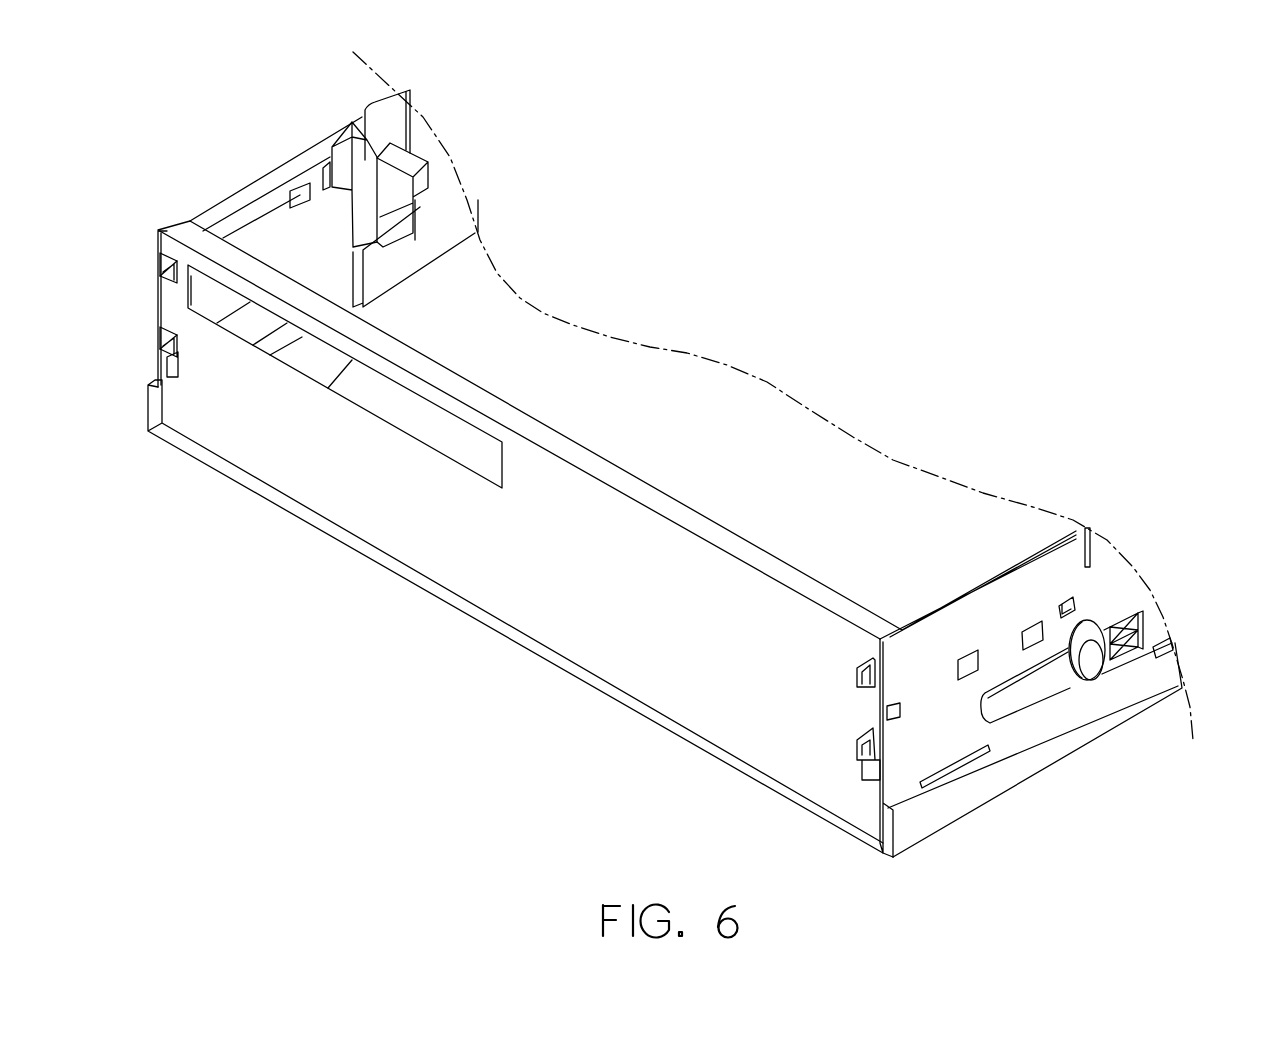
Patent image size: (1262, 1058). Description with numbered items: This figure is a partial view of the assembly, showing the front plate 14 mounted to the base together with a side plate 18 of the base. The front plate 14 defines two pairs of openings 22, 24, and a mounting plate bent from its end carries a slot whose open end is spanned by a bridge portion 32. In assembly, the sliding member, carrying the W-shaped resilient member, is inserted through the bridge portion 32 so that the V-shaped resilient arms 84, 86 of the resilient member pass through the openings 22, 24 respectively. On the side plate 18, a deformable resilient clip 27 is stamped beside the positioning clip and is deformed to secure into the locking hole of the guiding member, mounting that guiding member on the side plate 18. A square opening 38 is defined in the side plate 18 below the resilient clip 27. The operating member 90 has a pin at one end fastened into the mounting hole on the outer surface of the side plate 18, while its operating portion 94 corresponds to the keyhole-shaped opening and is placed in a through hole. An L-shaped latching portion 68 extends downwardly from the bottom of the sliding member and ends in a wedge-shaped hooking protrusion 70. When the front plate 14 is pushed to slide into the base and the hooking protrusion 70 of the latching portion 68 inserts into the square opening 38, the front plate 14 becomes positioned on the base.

The front plate 14 is at (400, 495).
The side plate 18 is at (430, 157).
The opening 22 is at (160, 255).
The opening 24 is at (160, 328).
The resilient clip 27 is at (1075, 606).
The bridge portion 32 is at (363, 180).
The square opening 38 is at (1138, 625).
The latching portion 68 is at (423, 222).
The hooking protrusion 70 is at (1148, 624).
The resilient arm 84 is at (162, 272).
The resilient arm 86 is at (162, 350).
The operating member 90 is at (997, 717).
The operating portion 94 is at (1090, 660).